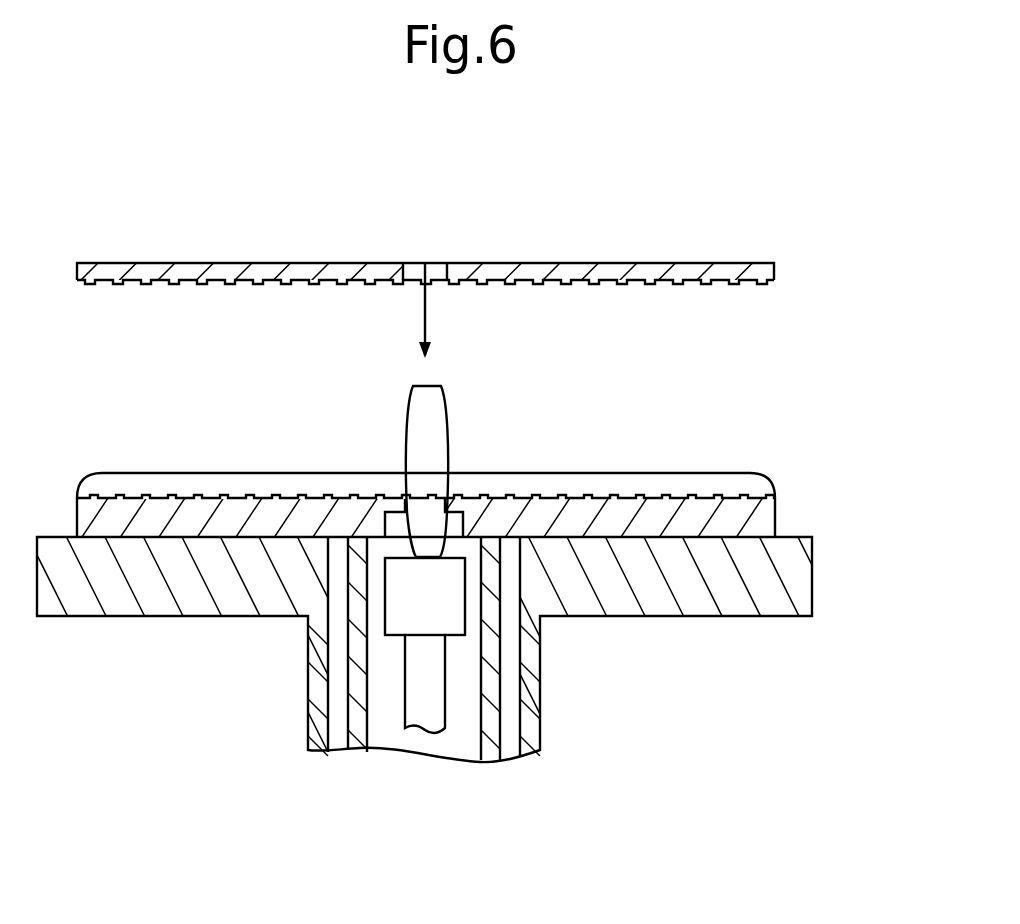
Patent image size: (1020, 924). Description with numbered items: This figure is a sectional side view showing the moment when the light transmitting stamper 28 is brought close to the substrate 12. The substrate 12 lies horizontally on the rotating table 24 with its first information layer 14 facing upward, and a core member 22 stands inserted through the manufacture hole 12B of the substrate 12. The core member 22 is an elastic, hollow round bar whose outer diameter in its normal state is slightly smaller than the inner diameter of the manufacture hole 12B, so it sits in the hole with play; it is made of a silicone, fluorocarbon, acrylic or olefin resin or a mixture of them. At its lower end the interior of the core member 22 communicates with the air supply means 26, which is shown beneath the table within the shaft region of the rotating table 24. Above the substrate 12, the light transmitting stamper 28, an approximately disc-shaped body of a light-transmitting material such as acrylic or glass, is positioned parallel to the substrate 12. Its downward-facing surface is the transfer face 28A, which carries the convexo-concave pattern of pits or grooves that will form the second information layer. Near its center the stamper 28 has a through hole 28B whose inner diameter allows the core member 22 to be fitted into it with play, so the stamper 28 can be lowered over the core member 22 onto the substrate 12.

The substrate 12 is at (776, 518).
The manufacture hole 12B is at (435, 505).
The first information layer 14 is at (691, 497).
The core member 22 is at (441, 398).
The rotating table 24 is at (824, 590).
The air supply means 26 is at (466, 628).
The light transmitting stamper 28 is at (586, 250).
The transfer face 28A is at (685, 283).
The through hole 28B is at (425, 262).